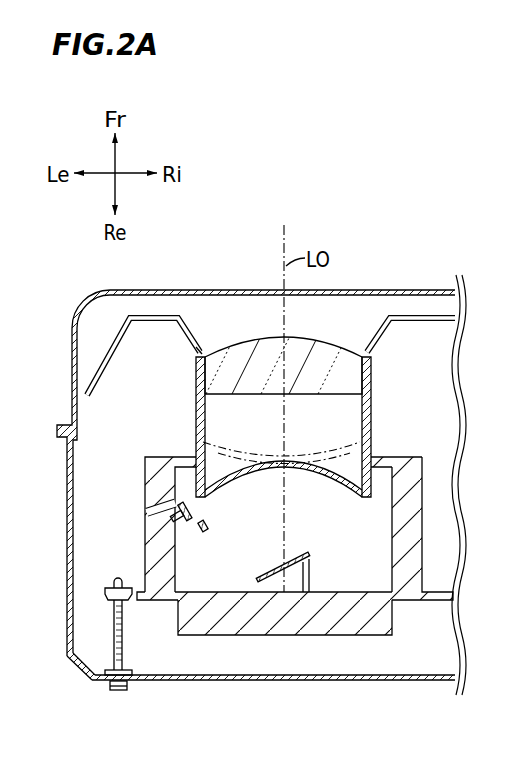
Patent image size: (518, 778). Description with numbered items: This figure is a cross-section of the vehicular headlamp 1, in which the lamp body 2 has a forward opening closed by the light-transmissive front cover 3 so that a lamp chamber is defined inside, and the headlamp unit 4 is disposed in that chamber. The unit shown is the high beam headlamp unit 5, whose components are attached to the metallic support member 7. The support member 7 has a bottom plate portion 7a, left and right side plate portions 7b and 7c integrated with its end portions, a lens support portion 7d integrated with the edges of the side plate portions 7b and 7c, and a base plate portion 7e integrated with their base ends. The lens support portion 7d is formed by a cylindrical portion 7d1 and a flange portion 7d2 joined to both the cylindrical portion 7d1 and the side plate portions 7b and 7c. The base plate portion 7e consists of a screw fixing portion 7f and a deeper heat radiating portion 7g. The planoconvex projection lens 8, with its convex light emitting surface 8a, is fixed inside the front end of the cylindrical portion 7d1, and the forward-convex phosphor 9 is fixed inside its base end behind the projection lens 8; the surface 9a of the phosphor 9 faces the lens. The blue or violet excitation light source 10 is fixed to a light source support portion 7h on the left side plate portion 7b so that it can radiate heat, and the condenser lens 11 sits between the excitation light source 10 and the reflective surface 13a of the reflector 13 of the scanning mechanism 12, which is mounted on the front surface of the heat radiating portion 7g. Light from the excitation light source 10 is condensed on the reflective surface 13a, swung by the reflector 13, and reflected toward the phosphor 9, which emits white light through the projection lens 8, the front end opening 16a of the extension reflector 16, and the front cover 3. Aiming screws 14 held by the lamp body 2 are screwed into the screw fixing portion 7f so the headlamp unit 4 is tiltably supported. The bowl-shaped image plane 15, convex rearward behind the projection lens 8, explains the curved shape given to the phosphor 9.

The vehicular headlamp 1 is at (78, 266).
The lamp body 2 is at (97, 679).
The front cover 3 is at (198, 290).
The headlamp unit 4 is at (396, 638).
The high beam headlamp unit 5 is at (174, 433).
The support member 7 is at (434, 452).
The bottom plate portion 7a is at (381, 482).
The side plate portion 7b is at (150, 477).
The side plate portion 7c is at (414, 498).
The lens support portion 7d is at (330, 427).
The cylindrical portion 7d1 is at (366, 403).
The flange portion 7d2 is at (372, 456).
The base plate portion 7e is at (233, 713).
The screw fixing portion 7f is at (140, 594).
The heat radiating portion 7g is at (242, 628).
The light source support portion 7h is at (177, 501).
The projection lens 8 is at (348, 375).
The light emitting surface 8a is at (330, 340).
The phosphor 9 is at (238, 480).
The second lens surface 9a is at (222, 478).
The excitation light source 10 is at (178, 515).
The condenser lens 11 is at (200, 533).
The scanning mechanism 12 is at (292, 584).
The reflector 13 is at (306, 574).
The reflective surface 13a is at (283, 571).
The aiming screw 14 is at (120, 691).
The image plane 15 is at (225, 448).
The extension reflector 16 is at (151, 312).
The front end opening 16a is at (207, 350).